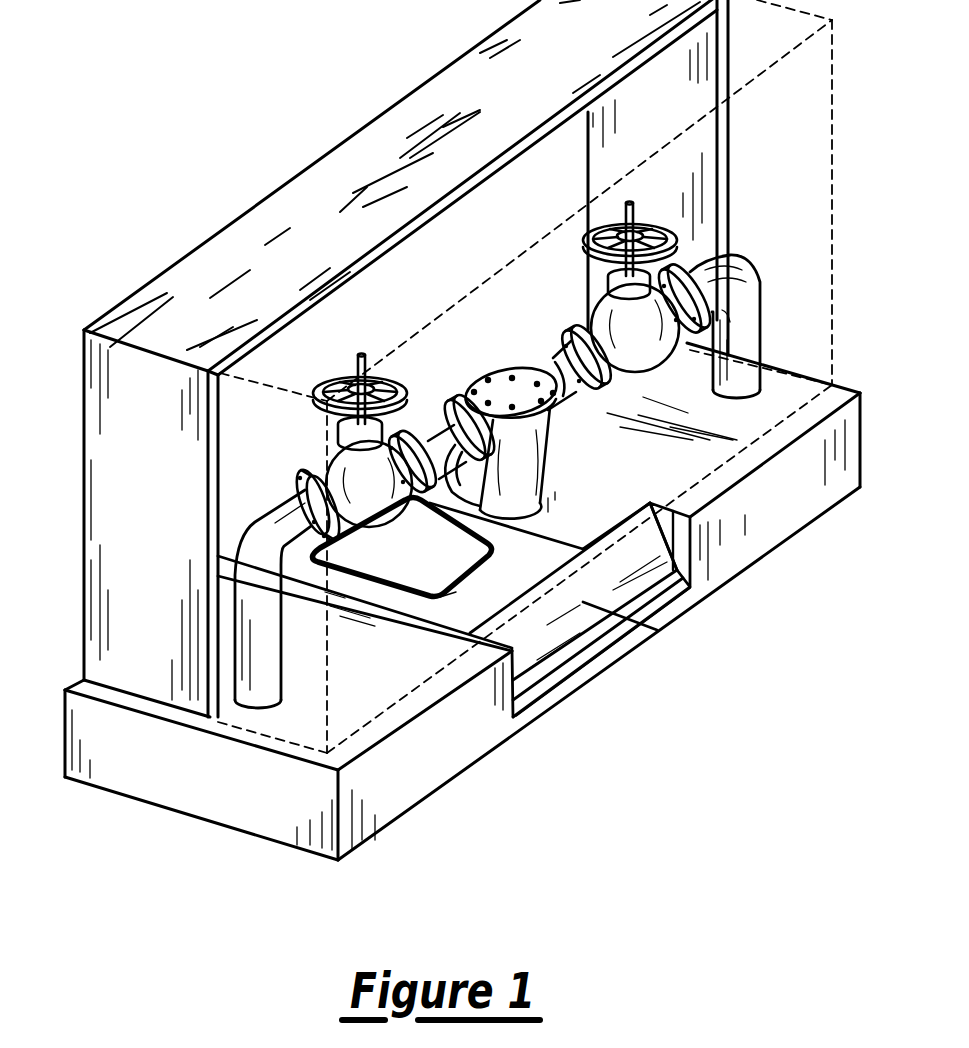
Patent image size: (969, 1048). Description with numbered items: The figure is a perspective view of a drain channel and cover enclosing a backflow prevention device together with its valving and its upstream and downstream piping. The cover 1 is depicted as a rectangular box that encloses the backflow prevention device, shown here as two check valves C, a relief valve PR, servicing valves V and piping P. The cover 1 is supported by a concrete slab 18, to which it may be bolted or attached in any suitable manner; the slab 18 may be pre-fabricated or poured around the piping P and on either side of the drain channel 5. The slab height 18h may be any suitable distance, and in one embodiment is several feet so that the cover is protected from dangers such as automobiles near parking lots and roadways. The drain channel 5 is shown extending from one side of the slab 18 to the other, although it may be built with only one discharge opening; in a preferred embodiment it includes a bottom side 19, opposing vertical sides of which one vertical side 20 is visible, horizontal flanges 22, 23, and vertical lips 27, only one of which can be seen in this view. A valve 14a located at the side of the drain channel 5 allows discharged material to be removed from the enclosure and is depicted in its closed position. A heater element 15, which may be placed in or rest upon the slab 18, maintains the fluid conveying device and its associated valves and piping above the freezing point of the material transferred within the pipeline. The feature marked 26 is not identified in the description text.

The cover 1 is at (138, 220).
The drain channel 5 is at (619, 706).
The valve 14a is at (682, 580).
The heater element 15 is at (448, 598).
The concrete slab 18 is at (222, 787).
The slab height 18h is at (128, 702).
The bottom side 19 is at (698, 566).
The vertical side 20 is at (598, 531).
The horizontal flange 22 is at (448, 598).
The horizontal flange 23 is at (582, 474).
The trough inlet edge 26 is at (657, 498).
The vertical lip 27 is at (588, 660).
The piping P is at (248, 563).
The servicing valve V is at (316, 402).
The check valve C is at (412, 435).
The relief valve PR is at (480, 374).